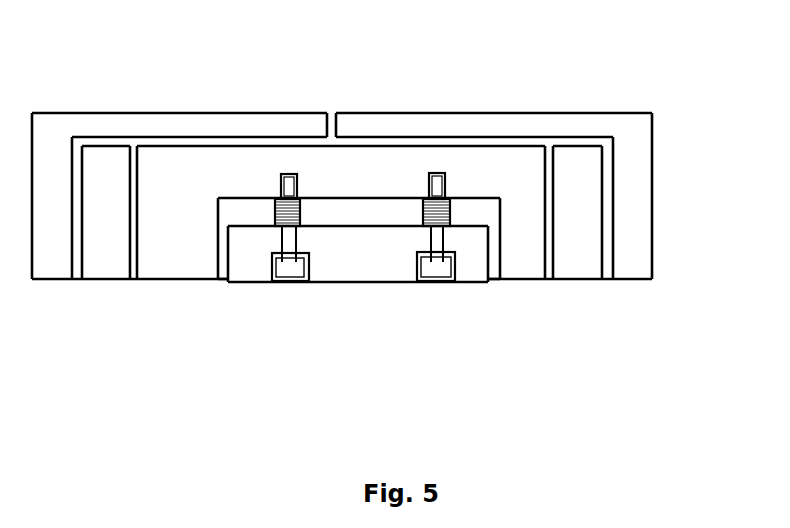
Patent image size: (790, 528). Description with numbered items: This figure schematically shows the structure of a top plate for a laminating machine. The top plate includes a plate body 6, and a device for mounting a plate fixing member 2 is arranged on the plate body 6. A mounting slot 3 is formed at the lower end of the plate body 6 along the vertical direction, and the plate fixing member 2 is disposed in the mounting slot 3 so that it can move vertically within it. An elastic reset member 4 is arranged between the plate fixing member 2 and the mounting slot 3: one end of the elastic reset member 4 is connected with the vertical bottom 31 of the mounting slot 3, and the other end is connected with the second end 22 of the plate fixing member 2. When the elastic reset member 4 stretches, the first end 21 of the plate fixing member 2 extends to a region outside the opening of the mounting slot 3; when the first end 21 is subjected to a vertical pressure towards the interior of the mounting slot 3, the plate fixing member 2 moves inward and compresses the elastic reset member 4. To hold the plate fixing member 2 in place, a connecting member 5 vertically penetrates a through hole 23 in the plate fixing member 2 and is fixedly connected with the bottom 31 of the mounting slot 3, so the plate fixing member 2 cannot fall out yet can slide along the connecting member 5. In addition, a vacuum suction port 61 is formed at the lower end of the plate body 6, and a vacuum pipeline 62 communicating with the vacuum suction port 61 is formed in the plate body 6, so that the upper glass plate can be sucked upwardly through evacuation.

The plate fixing member 2 is at (378, 258).
The first end 21 is at (333, 282).
The second end 22 is at (382, 222).
The through hole 23 is at (448, 247).
The mounting slot 3 is at (216, 238).
The bottom 31 is at (263, 202).
The elastic reset member 4 is at (284, 195).
The connecting member 5 is at (289, 260).
The plate body 6 is at (633, 141).
The vacuum suction port 61 is at (605, 278).
The vacuum pipeline 62 is at (605, 192).